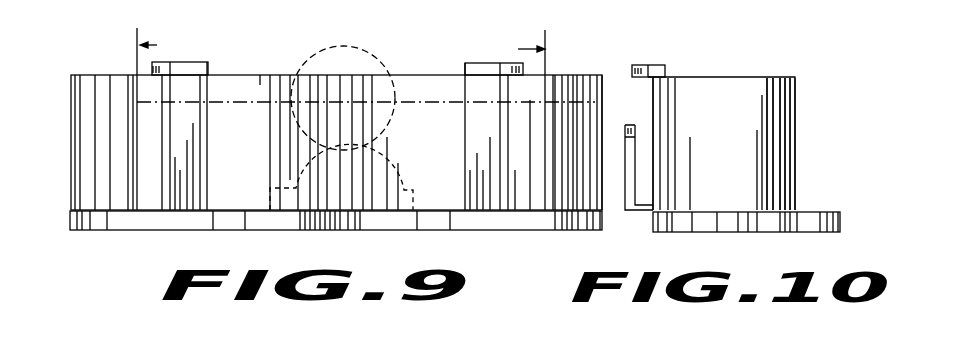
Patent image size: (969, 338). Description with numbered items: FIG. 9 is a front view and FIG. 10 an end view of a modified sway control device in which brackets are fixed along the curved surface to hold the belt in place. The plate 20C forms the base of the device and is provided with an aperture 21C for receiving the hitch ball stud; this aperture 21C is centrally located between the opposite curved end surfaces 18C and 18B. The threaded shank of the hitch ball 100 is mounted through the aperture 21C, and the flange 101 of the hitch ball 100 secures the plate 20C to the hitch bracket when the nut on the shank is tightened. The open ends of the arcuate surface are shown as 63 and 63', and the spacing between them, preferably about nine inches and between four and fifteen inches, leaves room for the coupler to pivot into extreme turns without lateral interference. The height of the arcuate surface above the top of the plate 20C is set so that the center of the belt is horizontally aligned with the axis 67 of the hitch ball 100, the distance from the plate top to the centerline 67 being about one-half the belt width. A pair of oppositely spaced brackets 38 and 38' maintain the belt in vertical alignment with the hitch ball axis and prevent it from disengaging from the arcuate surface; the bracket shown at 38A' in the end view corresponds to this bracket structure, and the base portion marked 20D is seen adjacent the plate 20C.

In FIG. 9, the curved end surface 18C is at (72, 117).
In FIG. 9, the curved end surface 18B is at (603, 127).
In FIG. 10, the curved end surface 18B is at (762, 87).
In FIG. 9, the plate 20C is at (167, 232).
In FIG. 10, the plate 20C is at (702, 233).
In FIG. 9, the flange portion 20D is at (235, 223).
In FIG. 10, the flange portion 20D is at (737, 233).
In FIG. 9, the aperture 21C is at (337, 225).
In FIG. 9, the bracket 38 is at (341, 124).
In FIG. 10, the bracket 38' is at (637, 188).
In FIG. 10, the lug 38A' is at (675, 59).
In FIG. 9, the open end 63 is at (159, 119).
In FIG. 9, the open end 63' is at (514, 120).
In FIG. 9, the axis 67 is at (240, 103).
In FIG. 9, the hitch ball 100 is at (370, 57).
In FIG. 9, the flange 101 is at (412, 183).